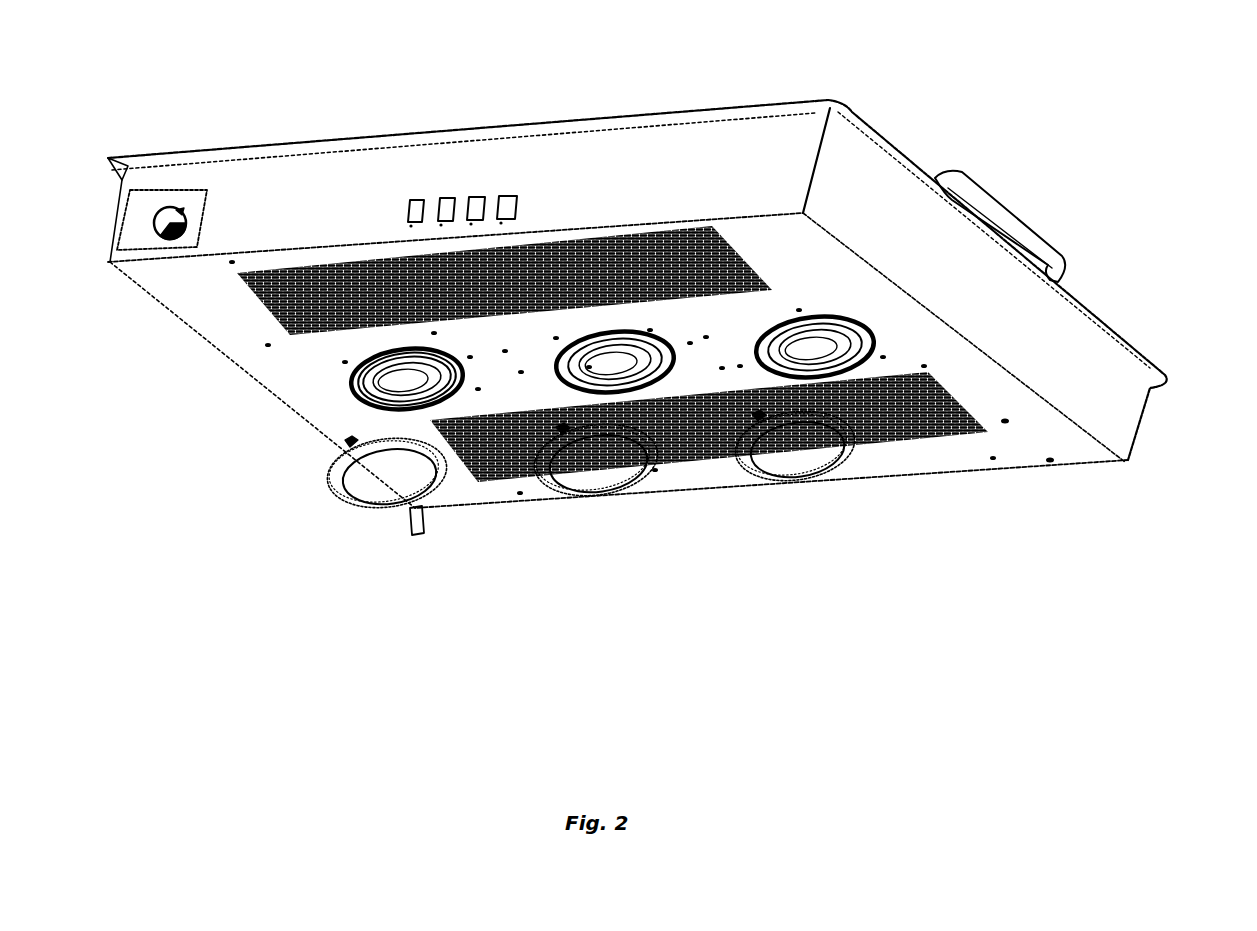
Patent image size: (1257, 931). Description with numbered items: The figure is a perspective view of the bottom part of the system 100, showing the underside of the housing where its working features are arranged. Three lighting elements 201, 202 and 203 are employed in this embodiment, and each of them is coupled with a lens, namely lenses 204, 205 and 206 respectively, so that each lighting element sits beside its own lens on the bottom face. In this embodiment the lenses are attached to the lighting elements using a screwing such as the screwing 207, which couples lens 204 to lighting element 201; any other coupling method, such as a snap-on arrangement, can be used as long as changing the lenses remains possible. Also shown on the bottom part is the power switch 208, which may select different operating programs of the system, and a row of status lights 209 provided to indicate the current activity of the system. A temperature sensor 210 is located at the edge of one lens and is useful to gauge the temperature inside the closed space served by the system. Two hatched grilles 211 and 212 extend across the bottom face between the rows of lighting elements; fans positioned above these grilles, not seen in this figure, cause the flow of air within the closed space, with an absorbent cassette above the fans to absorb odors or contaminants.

The lighting fixture housing 100 is at (710, 143).
The lighting element 201 is at (392, 382).
The lighting element 202 is at (625, 368).
The lighting element 203 is at (820, 350).
The lens 204 is at (380, 494).
The lens 205 is at (588, 478).
The lens 206 is at (800, 458).
The screwing 207 is at (345, 362).
The power switch 208 is at (172, 220).
The status lights 209 is at (458, 184).
The temperature sensor 210 is at (412, 530).
The grille 211 is at (740, 262).
The grille 212 is at (958, 412).